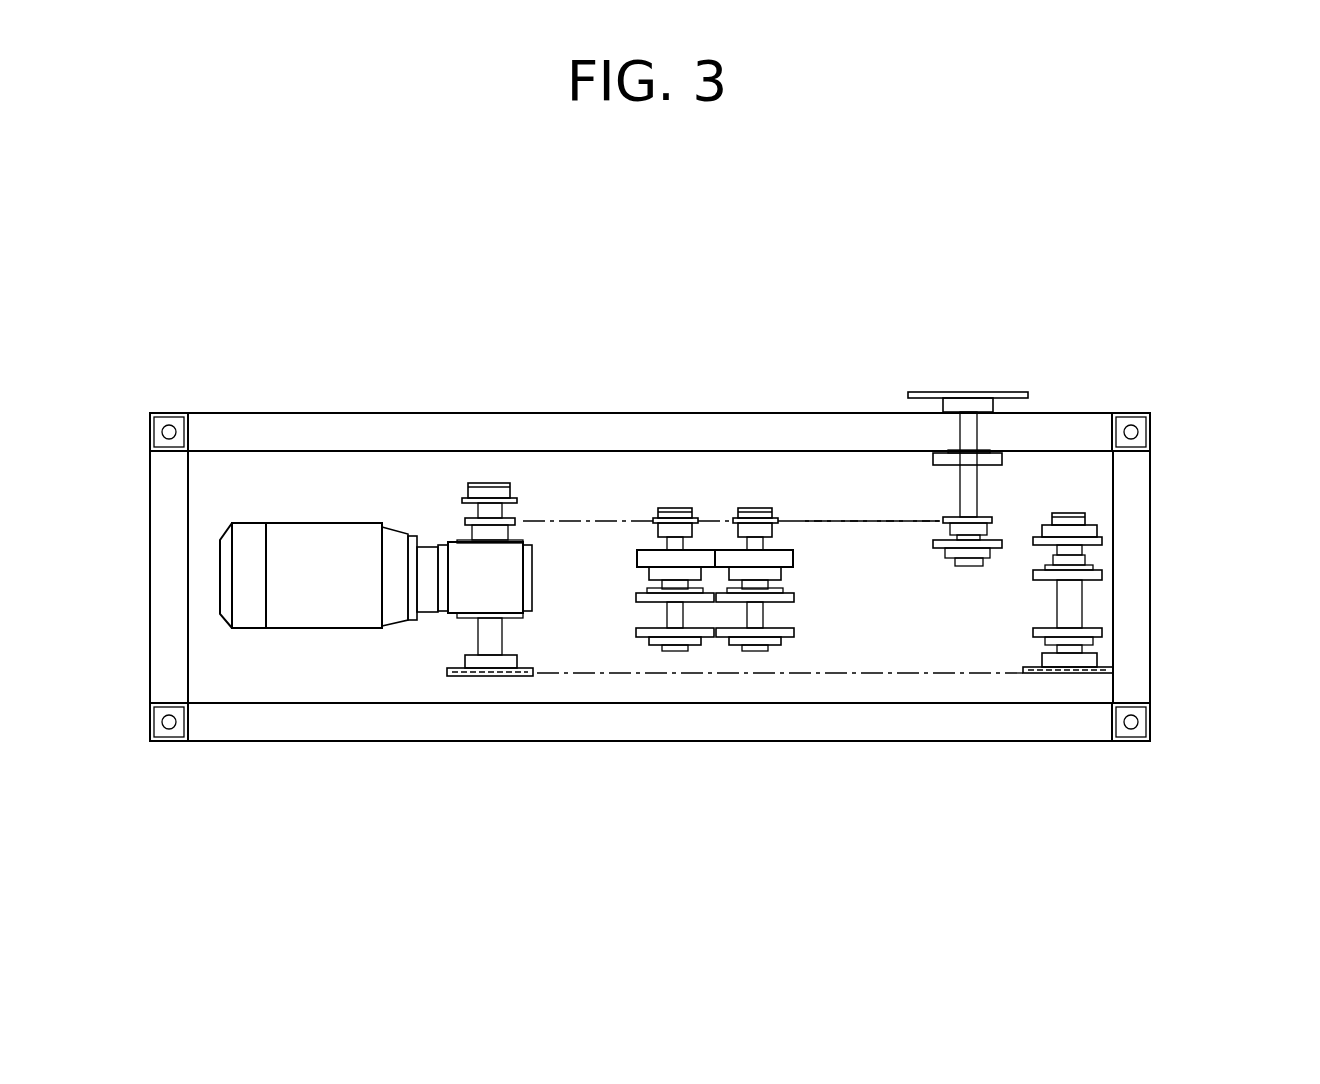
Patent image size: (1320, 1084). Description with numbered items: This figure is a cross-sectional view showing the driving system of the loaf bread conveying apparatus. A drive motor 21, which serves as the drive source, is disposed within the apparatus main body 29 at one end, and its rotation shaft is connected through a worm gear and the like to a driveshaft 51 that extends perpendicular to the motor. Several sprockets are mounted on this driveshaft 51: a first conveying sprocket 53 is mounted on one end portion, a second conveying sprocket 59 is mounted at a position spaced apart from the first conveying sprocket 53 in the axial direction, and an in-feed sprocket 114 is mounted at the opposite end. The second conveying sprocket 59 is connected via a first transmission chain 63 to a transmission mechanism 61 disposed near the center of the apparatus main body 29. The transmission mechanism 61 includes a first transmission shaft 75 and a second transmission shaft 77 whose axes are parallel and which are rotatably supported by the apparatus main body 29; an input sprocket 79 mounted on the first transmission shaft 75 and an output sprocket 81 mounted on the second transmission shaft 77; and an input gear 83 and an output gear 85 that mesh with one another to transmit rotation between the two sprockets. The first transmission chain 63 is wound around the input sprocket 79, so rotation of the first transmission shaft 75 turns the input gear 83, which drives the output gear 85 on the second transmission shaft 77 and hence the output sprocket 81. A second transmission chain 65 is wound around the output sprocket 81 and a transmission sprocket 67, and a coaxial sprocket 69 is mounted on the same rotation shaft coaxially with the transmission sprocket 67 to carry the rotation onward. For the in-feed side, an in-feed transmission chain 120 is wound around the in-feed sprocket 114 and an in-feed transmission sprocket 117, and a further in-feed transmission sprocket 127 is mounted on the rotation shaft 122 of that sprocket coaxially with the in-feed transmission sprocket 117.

The drive motor 21 is at (300, 603).
The apparatus main body 29 is at (958, 728).
The driveshaft 51 is at (460, 630).
The first conveying sprocket 53 is at (489, 482).
The second conveying sprocket 59 is at (518, 521).
The transmission mechanism 61 is at (733, 478).
The first transmission chain 63 is at (611, 521).
The second transmission chain 65 is at (858, 520).
The transmission sprocket 67 is at (987, 521).
The coaxial sprocket 69 is at (983, 392).
The first transmission shaft 75 is at (675, 652).
The second transmission shaft 77 is at (755, 652).
The input sprocket 79 is at (676, 508).
The output sprocket 81 is at (757, 508).
The input gear 83 is at (652, 557).
The output gear 85 is at (787, 557).
The in-feed sprocket 114 is at (490, 680).
The in-feed transmission sprocket 117 is at (1053, 678).
The in-feed transmission chain 120 is at (893, 673).
The rotation shaft 122 is at (1070, 602).
The in-feed transmission sprocket 127 is at (1080, 533).